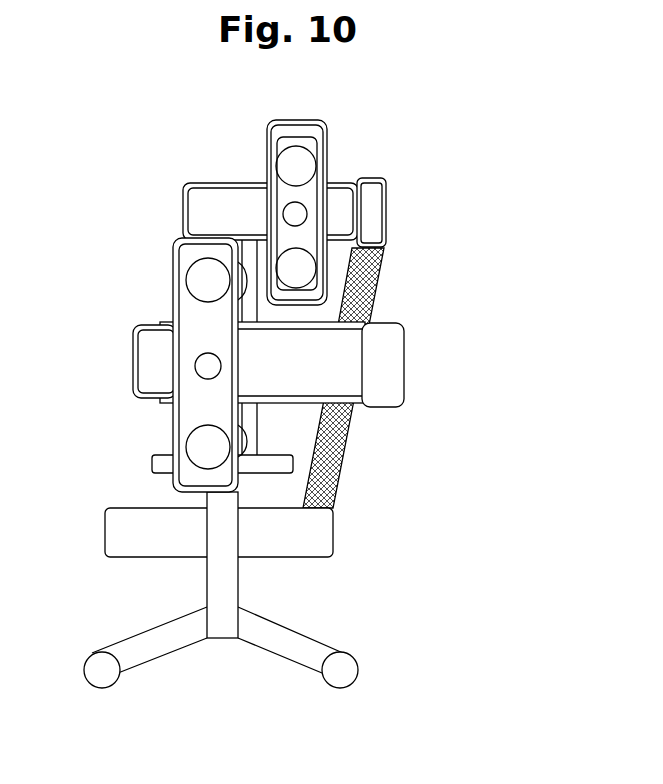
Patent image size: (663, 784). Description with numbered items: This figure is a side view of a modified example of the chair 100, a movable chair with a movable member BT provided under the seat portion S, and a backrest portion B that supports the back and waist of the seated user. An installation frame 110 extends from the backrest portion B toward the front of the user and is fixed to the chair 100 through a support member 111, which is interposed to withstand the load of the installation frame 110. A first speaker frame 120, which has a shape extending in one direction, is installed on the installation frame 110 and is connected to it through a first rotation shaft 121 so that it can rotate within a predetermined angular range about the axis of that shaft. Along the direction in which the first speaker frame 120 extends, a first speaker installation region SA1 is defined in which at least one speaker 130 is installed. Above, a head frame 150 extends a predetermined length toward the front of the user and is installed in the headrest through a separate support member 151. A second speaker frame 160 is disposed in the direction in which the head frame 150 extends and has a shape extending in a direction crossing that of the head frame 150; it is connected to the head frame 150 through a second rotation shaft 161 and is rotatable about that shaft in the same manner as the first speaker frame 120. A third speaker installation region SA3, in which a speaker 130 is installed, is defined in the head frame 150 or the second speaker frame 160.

The chair 100 is at (528, 144).
The installation frame 110 is at (137, 352).
The support member 111 is at (394, 378).
The first speaker frame 120 is at (290, 165).
The first rotation shaft 121 is at (203, 366).
The speaker 130 is at (192, 285).
The head frame 150 is at (182, 210).
The support member 151 is at (372, 195).
The second speaker frame 160 is at (353, 288).
The second rotation shaft 161 is at (291, 211).
The backrest portion B is at (345, 438).
The movable member BT is at (213, 583).
The seat portion S is at (320, 533).
The first speaker installation region SA1 is at (174, 428).
The third speaker installation region SA3 is at (312, 220).